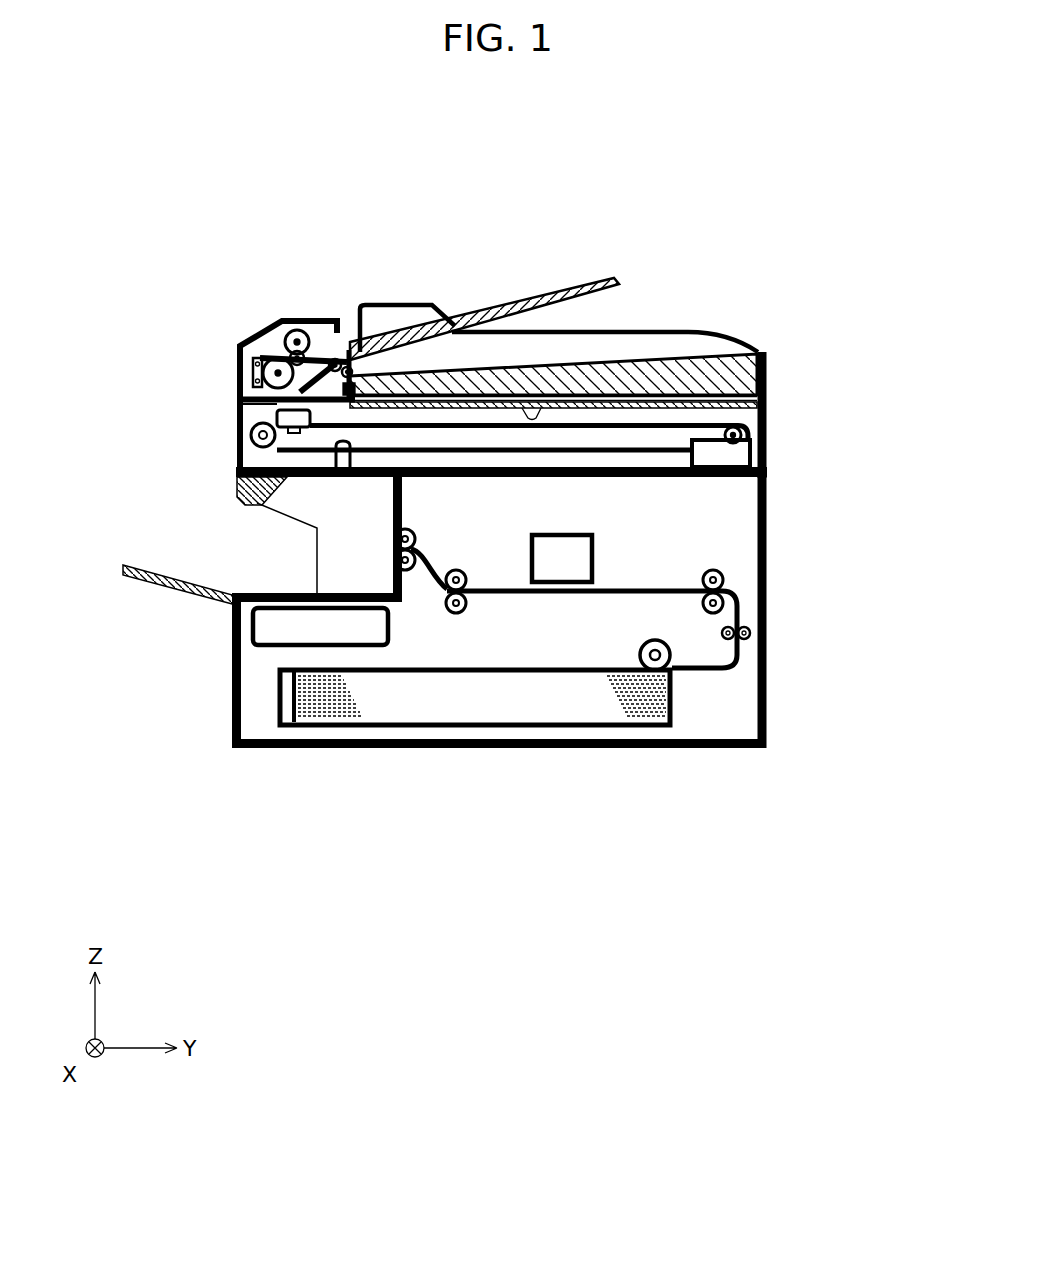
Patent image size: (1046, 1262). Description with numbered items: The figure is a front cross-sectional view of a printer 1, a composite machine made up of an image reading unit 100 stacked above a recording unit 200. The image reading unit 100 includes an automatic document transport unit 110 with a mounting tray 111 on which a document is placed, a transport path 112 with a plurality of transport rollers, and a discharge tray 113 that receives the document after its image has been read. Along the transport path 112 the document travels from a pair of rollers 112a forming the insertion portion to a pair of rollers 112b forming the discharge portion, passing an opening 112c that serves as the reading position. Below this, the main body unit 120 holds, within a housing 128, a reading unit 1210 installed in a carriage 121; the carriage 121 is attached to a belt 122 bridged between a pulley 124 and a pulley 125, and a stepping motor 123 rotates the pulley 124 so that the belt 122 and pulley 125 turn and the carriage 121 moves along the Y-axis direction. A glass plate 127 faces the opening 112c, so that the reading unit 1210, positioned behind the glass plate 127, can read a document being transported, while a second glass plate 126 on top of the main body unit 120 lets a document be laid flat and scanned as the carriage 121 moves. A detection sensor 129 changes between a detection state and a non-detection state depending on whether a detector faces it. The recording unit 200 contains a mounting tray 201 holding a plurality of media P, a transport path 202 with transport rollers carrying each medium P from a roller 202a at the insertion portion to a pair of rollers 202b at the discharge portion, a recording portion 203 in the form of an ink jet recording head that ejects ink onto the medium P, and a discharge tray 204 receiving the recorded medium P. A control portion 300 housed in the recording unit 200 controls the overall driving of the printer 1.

The printer 1 is at (873, 231).
The image reading unit 100 is at (866, 363).
The automatic document transport unit 110 is at (768, 374).
The mounting tray 111 is at (505, 303).
The transport path 112 is at (272, 323).
The pair of rollers 112a is at (302, 352).
The pair of rollers 112b is at (347, 358).
The opening 112c is at (262, 372).
The discharge tray 113 is at (577, 352).
The main body unit 120 is at (768, 425).
The carriage 121 is at (376, 471).
The reading unit 1210 is at (250, 458).
The belt 122 is at (673, 424).
The stepping motor 123 is at (735, 452).
The pulley 124 is at (738, 428).
The pulley 125 is at (258, 437).
The glass plate 126 is at (543, 402).
The glass plate 127 is at (280, 418).
The housing 128 is at (243, 410).
The detection sensor 129 is at (343, 440).
The recording unit 200 is at (770, 621).
The mounting tray 201 is at (352, 727).
The transport path 202 is at (737, 663).
The roller 202a is at (662, 652).
The pair of rollers 202b is at (397, 550).
The recording portion 203 is at (555, 558).
The discharge tray 204 is at (214, 580).
The control portion 300 is at (272, 627).
The medium P is at (315, 668).